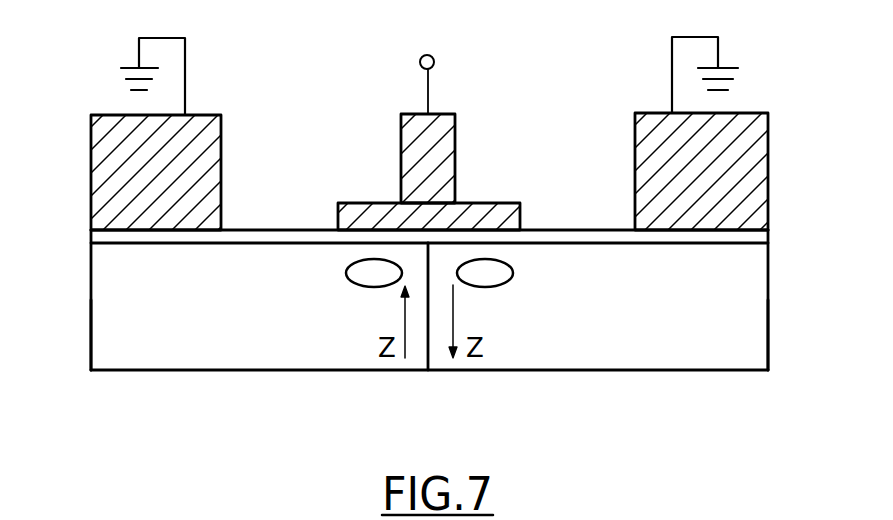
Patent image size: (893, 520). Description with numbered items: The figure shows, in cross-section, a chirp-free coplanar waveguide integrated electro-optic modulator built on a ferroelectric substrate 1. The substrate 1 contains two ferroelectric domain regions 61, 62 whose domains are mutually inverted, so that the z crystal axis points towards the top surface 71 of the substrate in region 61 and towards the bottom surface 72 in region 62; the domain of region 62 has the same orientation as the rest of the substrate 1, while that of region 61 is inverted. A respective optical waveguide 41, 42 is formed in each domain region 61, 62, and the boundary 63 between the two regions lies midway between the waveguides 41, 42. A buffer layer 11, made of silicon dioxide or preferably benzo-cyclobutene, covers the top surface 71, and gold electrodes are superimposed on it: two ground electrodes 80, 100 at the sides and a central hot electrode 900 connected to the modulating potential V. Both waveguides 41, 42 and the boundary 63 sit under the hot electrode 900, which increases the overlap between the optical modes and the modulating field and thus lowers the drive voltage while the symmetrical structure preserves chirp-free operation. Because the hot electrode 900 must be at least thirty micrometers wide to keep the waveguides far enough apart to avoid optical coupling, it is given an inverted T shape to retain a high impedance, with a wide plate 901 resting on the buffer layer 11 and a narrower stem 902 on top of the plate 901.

The substrate 1 is at (152, 371).
The buffer layer 11 is at (257, 229).
The optical waveguide 41 is at (373, 277).
The optical waveguide 42 is at (498, 277).
The ferroelectric domain region 61 is at (143, 350).
The ferroelectric domain region 62 is at (750, 355).
The boundary 63 is at (430, 352).
The top surface 71 is at (555, 242).
The bottom surface 72 is at (267, 371).
The ground electrode 80 is at (750, 175).
The ground electrode 100 is at (90, 195).
The hot electrode 900 is at (465, 130).
The plate 901 is at (507, 213).
The stem 902 is at (418, 148).